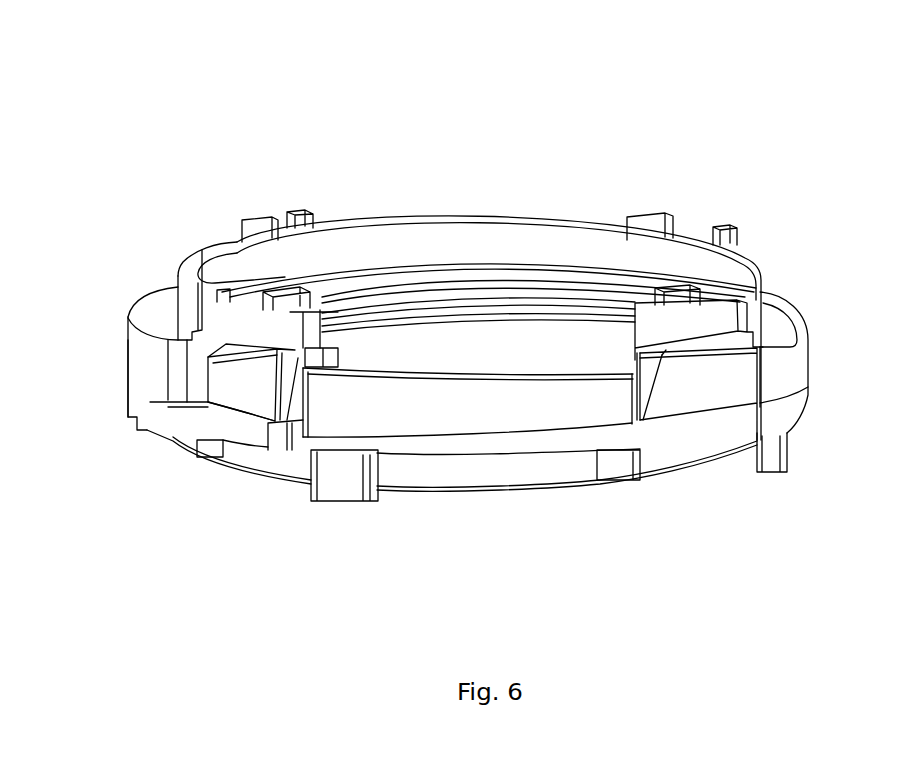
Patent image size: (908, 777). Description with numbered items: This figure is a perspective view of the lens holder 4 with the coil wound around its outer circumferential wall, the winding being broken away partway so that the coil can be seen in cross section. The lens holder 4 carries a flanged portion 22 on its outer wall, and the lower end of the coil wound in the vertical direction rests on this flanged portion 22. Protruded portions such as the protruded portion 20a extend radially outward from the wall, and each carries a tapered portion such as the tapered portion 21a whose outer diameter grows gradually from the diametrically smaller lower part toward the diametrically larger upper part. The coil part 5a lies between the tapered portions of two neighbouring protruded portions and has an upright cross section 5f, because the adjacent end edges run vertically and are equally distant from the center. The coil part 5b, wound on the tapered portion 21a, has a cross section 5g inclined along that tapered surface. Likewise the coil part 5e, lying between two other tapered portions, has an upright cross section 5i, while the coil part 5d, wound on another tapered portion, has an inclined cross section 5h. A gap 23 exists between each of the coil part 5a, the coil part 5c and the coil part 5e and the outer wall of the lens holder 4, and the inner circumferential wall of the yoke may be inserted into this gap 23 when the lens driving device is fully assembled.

The lens holder 4 is at (558, 218).
The gap 23 is at (165, 317).
The protruded portion 20a is at (712, 297).
The tapered portion 21a is at (638, 468).
The flanged portion 22 is at (500, 437).
The coil part 5a is at (793, 355).
The coil part 5b is at (727, 387).
The coil part 5c is at (435, 405).
The coil part 5d is at (238, 385).
The coil part 5e is at (145, 367).
The coil cross section 5f is at (760, 373).
The coil cross section 5g is at (650, 395).
The coil cross section 5h is at (288, 377).
The coil cross section 5i is at (178, 365).